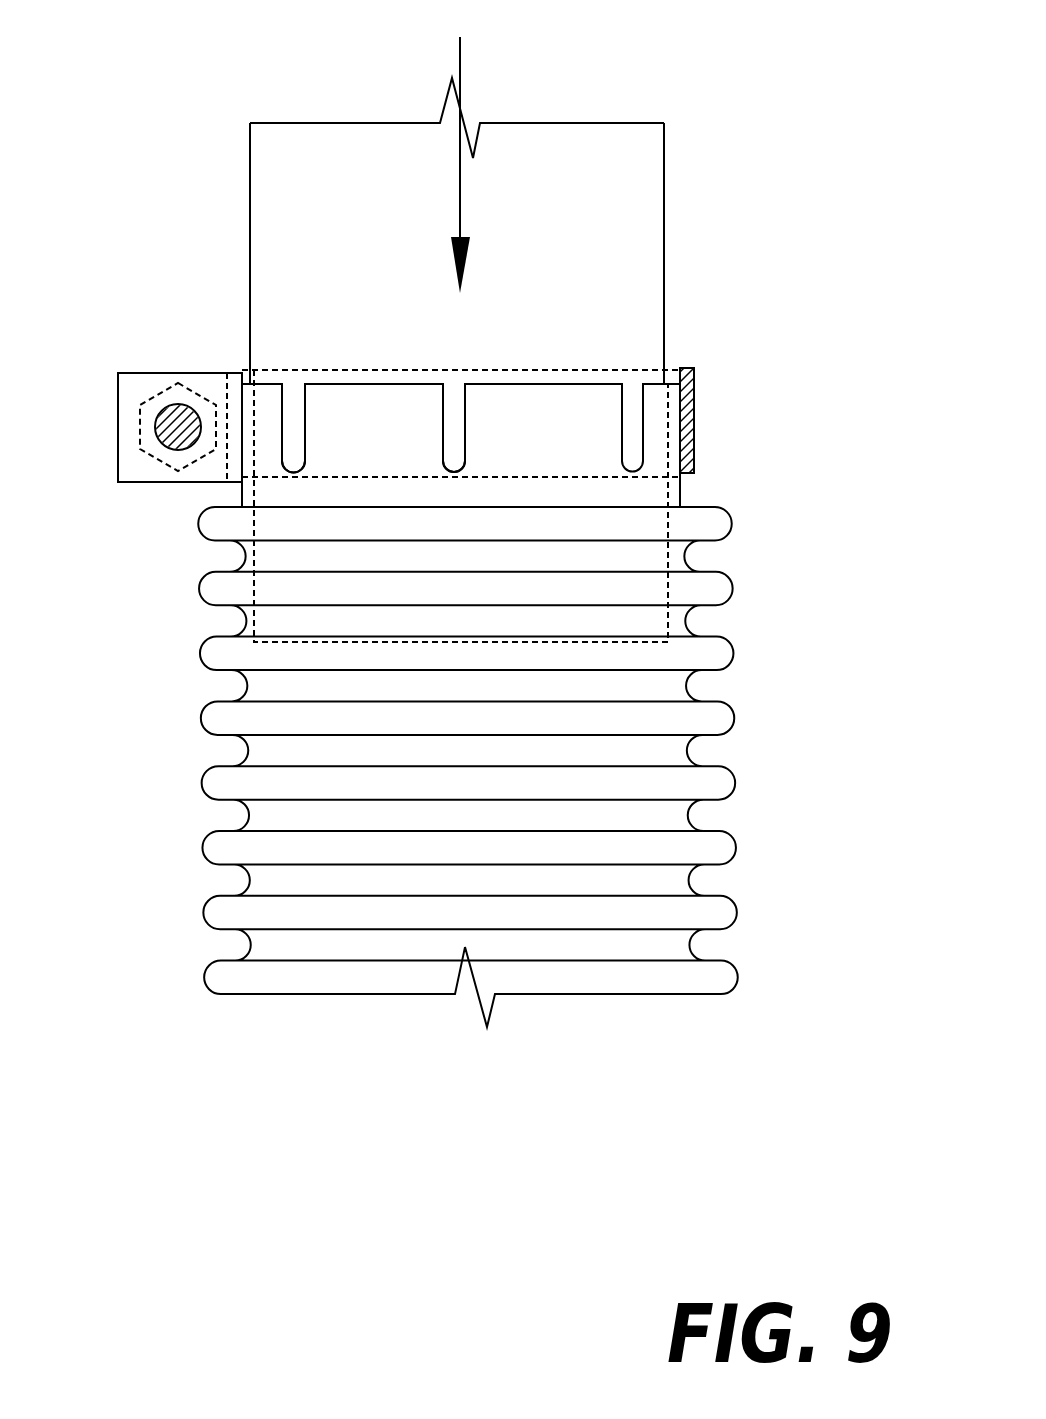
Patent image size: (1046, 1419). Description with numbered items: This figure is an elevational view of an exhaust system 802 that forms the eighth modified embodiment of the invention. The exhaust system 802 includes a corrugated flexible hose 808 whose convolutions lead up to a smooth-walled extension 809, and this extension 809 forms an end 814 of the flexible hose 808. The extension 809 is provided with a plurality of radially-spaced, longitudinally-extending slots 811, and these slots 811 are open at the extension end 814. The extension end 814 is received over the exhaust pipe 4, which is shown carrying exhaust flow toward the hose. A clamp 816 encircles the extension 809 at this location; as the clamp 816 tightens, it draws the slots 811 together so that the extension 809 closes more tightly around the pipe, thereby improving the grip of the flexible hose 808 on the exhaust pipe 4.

The exhaust pipe 4 is at (664, 123).
The exhaust system 802 is at (178, 146).
The corrugated flexible hose 808 is at (705, 995).
The smooth-walled extension 809 is at (587, 448).
The slots 811 is at (445, 400).
The extension end 814 is at (505, 383).
The clamp 816 is at (700, 365).